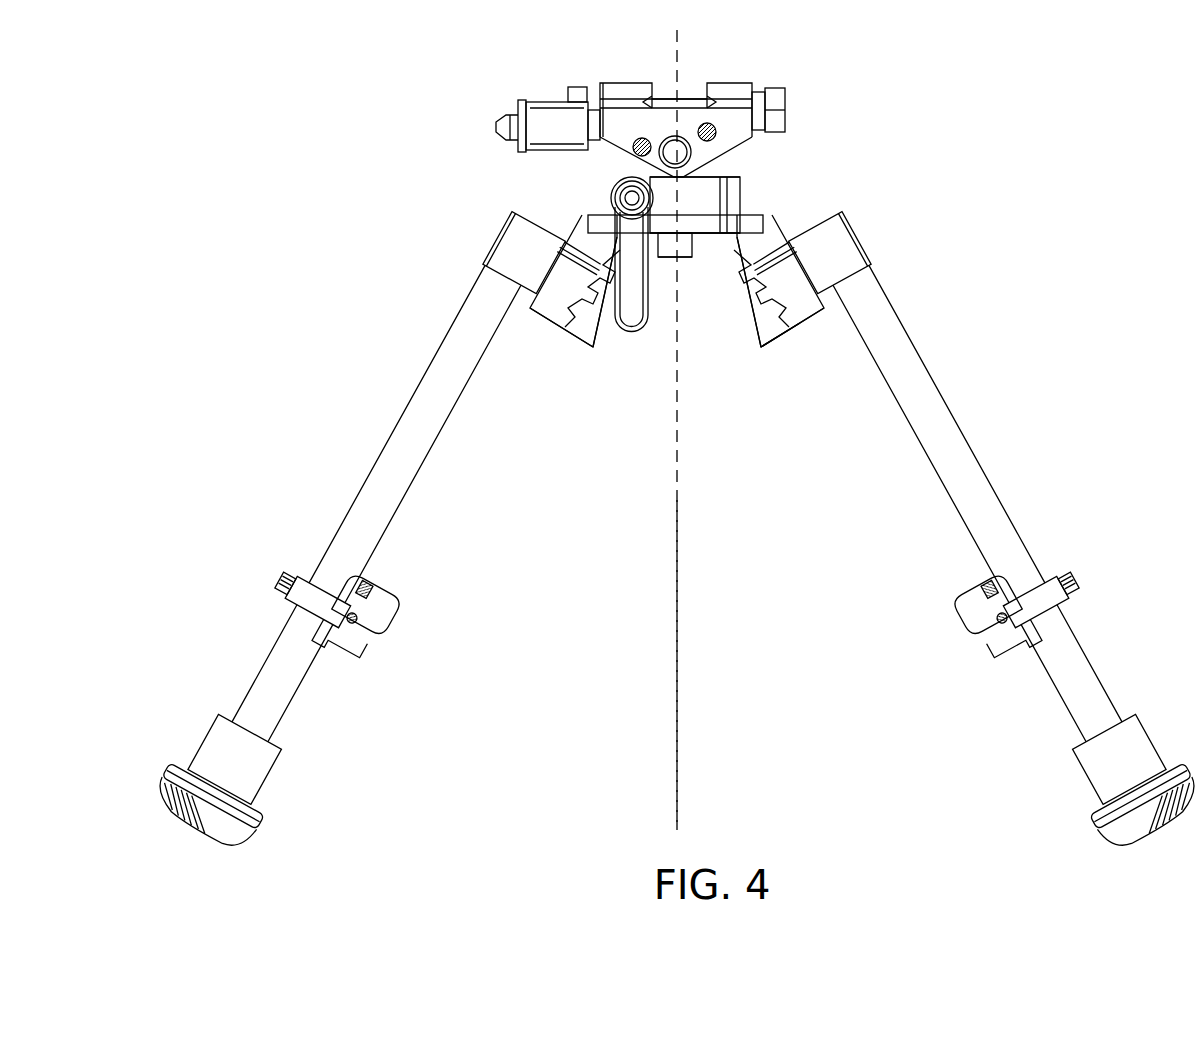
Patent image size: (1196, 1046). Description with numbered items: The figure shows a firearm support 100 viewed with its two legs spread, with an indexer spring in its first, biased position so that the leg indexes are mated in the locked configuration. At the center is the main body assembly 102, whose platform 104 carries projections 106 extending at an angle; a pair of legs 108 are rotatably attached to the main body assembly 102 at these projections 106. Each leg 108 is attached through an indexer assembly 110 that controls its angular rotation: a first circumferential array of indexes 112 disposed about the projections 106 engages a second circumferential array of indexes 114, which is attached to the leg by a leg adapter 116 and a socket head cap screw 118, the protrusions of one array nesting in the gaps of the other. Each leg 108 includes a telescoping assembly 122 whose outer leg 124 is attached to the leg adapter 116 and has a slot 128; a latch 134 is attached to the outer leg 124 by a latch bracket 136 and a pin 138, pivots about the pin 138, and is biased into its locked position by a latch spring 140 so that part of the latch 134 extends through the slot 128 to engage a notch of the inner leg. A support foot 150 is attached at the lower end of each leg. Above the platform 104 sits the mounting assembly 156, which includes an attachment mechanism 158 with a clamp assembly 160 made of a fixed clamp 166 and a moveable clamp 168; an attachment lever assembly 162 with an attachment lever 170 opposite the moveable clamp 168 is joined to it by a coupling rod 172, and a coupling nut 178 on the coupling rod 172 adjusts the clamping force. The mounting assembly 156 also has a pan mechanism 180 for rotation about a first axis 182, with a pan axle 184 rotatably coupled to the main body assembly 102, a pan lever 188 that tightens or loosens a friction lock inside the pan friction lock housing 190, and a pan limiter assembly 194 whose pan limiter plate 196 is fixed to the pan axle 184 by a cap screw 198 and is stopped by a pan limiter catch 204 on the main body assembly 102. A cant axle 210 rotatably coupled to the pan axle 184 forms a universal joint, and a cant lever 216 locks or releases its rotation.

The firearm support 100 is at (910, 50).
The main body assembly 102 is at (797, 205).
The platform 104 is at (603, 214).
The projections 106 is at (548, 322).
The legs 108 is at (352, 348).
The indexer assembly 110 is at (736, 371).
The first circumferential array of indexes 112 is at (567, 330).
The second circumferential array of indexes 114 is at (590, 340).
The leg adapter 116 is at (497, 240).
The socket head cap screw 118 is at (615, 327).
The telescoping assembly 122 is at (399, 694).
The outer leg 124 is at (406, 414).
The slot 128 is at (313, 632).
The latch 134 is at (385, 602).
The latch bracket 136 is at (330, 598).
The pin 138 is at (348, 620).
The latch spring 140 is at (360, 580).
The support foot 150 is at (258, 786).
The mounting assembly 156 is at (802, 74).
The attachment mechanism 158 is at (681, 56).
The clamp assembly 160 is at (649, 72).
The attachment lever assembly 162 is at (580, 70).
The fixed clamp 166 is at (631, 83).
The moveable clamp 168 is at (730, 84).
The attachment lever 170 is at (590, 88).
The coupling rod 172 is at (679, 98).
The coupling nut 178 is at (786, 102).
The pan mechanism 180 is at (528, 177).
The first axis 182 is at (682, 682).
The pan axle 184 is at (707, 173).
The pan lever 188 is at (650, 276).
The pan friction lock housing 190 is at (741, 194).
The pan limiter assembly 194 is at (695, 264).
The pan limiter plate 196 is at (708, 232).
The cap screw 198 is at (685, 242).
The pan limiter catch 204 is at (722, 237).
The cant axle 210 is at (666, 141).
The cant lever 216 is at (496, 125).